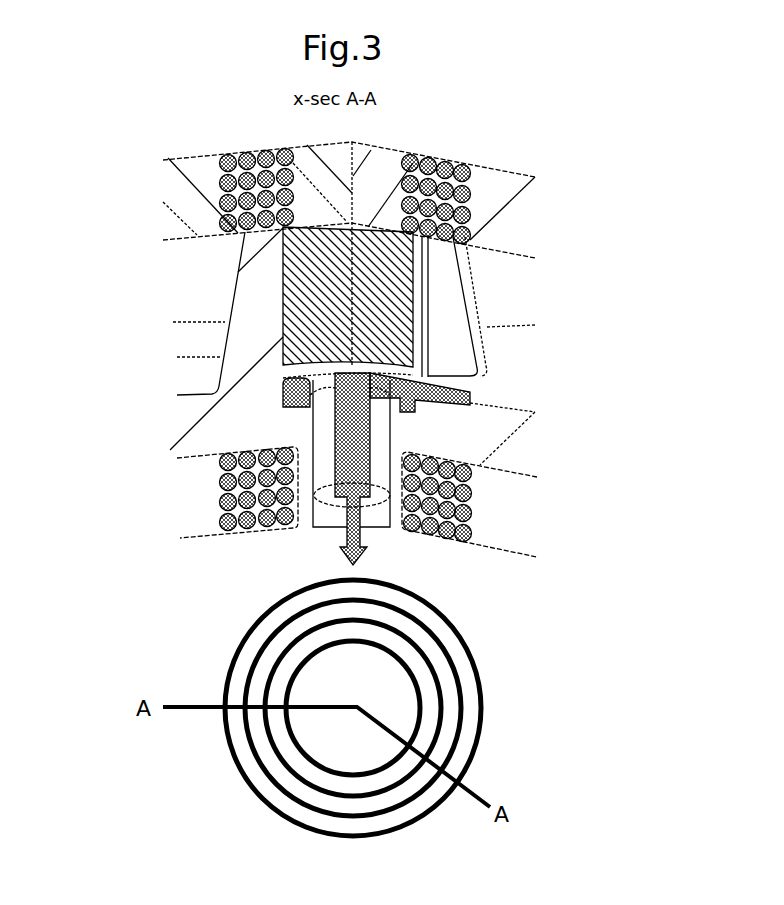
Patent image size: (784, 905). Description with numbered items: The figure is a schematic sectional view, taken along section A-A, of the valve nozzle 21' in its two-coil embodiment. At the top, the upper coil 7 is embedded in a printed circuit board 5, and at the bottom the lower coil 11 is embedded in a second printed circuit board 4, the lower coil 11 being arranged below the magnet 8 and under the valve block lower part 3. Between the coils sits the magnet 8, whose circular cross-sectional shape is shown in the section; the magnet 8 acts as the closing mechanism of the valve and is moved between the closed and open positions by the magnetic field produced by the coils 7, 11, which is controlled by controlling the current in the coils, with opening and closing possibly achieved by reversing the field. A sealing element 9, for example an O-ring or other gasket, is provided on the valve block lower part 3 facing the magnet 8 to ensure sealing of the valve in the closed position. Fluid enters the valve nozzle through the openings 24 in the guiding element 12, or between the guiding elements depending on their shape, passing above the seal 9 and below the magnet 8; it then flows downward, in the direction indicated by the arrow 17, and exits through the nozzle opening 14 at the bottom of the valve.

The valve block lower part 3 is at (530, 440).
The printed circuit board 4 is at (185, 531).
The printed circuit board 5 is at (178, 150).
The upper coil 7 is at (432, 170).
The magnet 8 is at (430, 298).
The sealing element 9 is at (283, 388).
The lower coil 11 is at (447, 533).
The guiding element 12 is at (257, 292).
The nozzle opening 14 is at (302, 537).
The arrow 17 is at (470, 393).
The valve nozzle 21' is at (406, 253).
The openings 24 is at (495, 388).